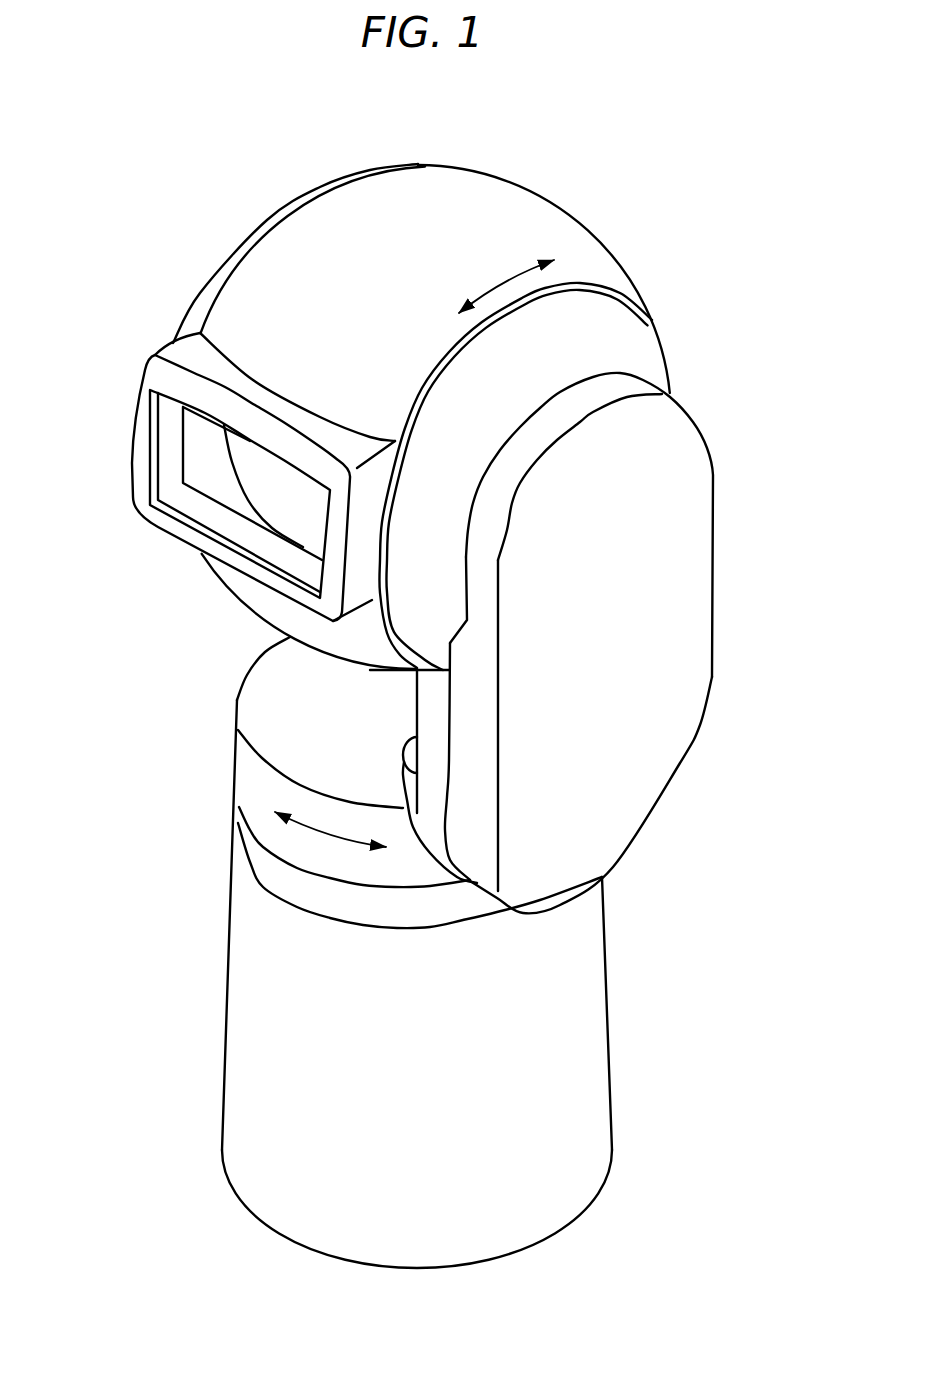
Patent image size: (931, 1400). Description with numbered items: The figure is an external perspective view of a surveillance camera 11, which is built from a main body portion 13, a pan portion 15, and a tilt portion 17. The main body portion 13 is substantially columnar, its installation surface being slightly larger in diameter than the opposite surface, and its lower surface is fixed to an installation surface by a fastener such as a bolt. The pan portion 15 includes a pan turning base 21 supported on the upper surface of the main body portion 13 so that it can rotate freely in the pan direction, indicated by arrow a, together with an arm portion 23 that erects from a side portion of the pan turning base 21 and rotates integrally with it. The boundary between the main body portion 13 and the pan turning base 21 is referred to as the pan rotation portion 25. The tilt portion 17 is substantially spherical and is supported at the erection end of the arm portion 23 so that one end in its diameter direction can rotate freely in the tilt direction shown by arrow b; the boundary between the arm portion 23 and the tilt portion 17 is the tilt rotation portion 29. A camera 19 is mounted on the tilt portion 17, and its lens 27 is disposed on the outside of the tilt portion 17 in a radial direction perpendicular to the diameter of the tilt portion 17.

The surveillance camera 11 is at (201, 156).
The main body portion 13 is at (232, 1033).
The pan portion 15 is at (235, 706).
The tilt portion 17 is at (419, 165).
The camera 19 is at (133, 449).
The pan turning base 21 is at (248, 768).
The arm portion 23 is at (693, 566).
The pan rotation portion 25 is at (282, 871).
The lens 27 is at (287, 512).
The tilt rotation portion 29 is at (603, 279).